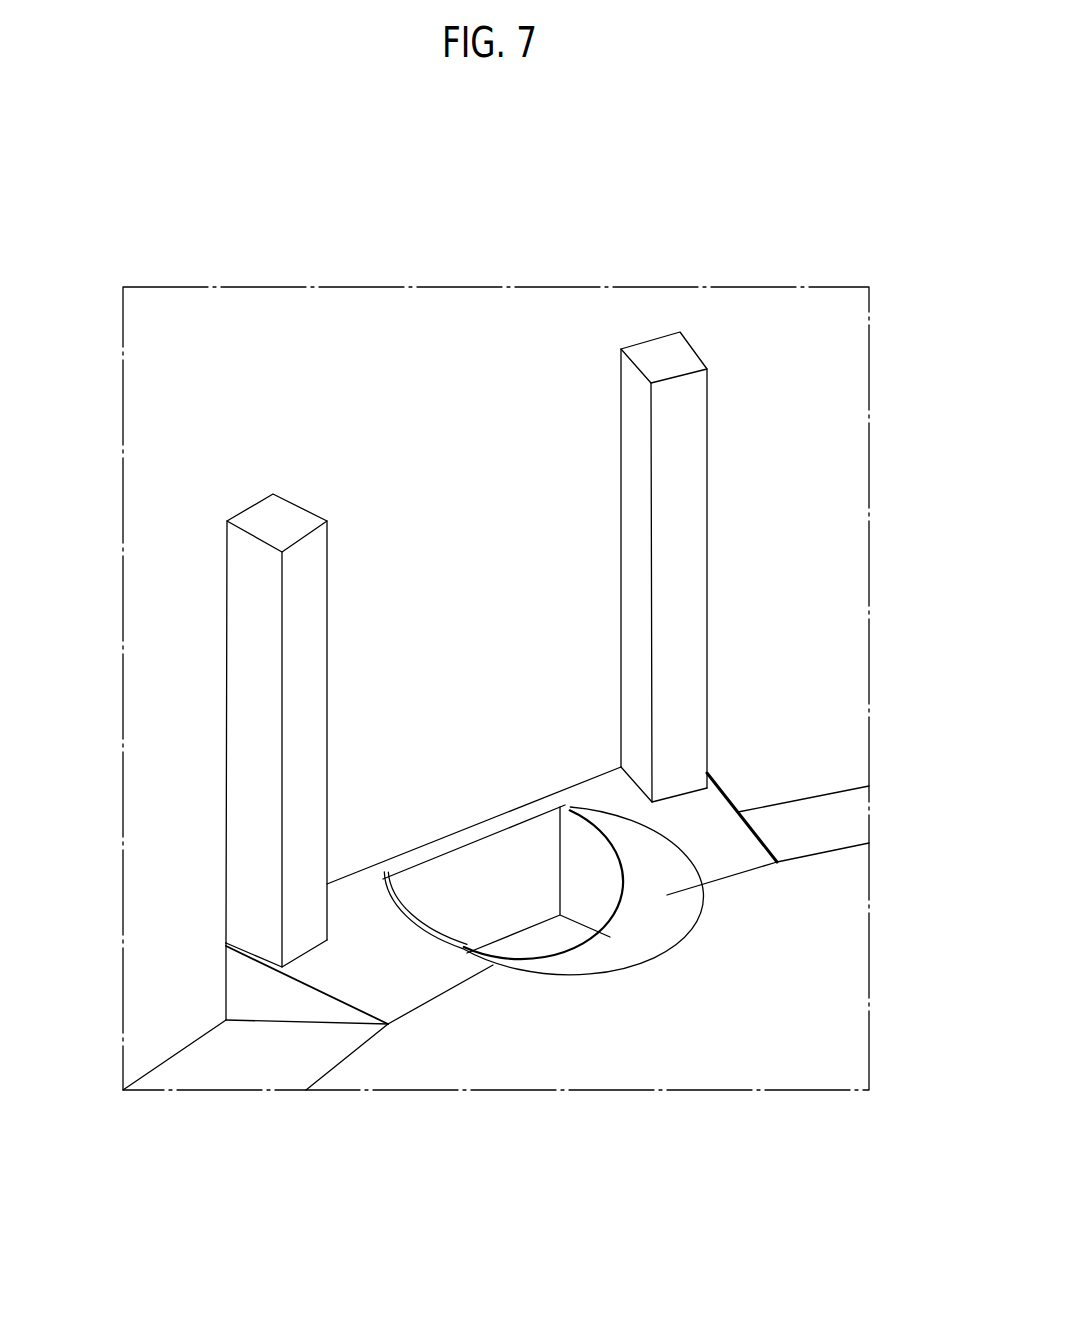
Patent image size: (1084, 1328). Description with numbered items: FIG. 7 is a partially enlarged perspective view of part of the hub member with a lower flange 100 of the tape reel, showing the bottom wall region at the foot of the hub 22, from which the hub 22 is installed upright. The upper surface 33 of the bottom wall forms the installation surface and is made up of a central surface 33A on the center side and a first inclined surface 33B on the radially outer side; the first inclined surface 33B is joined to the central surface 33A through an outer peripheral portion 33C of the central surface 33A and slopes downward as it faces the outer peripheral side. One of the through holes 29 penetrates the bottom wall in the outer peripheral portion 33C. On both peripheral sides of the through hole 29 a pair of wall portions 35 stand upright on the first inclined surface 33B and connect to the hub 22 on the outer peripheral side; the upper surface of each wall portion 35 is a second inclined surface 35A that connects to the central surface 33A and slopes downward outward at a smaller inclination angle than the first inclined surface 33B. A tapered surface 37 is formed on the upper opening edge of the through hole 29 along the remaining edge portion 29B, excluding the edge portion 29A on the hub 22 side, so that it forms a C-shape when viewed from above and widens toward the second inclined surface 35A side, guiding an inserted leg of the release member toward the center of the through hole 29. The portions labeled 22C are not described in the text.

The hub member with a lower flange 100 is at (811, 1133).
The hub 22 is at (850, 548).
The pillar portion 22C is at (226, 701).
The through hole 29 is at (554, 891).
The edge portion 29A is at (420, 873).
The remaining edge portion 29B is at (572, 955).
The upper surface 33 is at (496, 969).
The central surface 33A is at (382, 1071).
The first inclined surface 33B is at (210, 1071).
The outer peripheral portion 33C is at (430, 998).
The wall portion 35 is at (499, 956).
The second inclined surface 35A is at (367, 997).
The tapered surface 37 is at (640, 923).